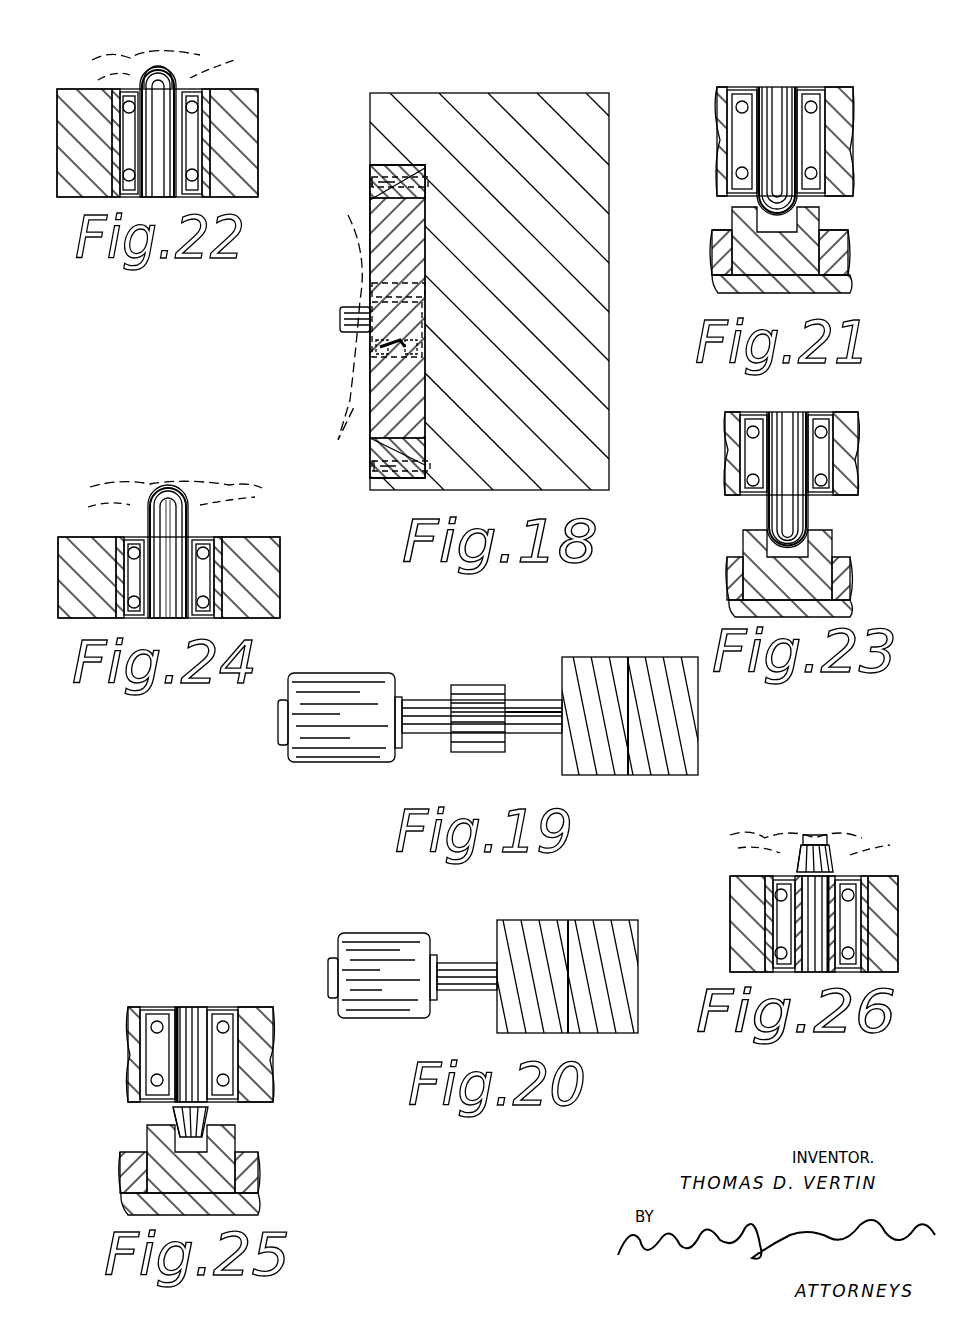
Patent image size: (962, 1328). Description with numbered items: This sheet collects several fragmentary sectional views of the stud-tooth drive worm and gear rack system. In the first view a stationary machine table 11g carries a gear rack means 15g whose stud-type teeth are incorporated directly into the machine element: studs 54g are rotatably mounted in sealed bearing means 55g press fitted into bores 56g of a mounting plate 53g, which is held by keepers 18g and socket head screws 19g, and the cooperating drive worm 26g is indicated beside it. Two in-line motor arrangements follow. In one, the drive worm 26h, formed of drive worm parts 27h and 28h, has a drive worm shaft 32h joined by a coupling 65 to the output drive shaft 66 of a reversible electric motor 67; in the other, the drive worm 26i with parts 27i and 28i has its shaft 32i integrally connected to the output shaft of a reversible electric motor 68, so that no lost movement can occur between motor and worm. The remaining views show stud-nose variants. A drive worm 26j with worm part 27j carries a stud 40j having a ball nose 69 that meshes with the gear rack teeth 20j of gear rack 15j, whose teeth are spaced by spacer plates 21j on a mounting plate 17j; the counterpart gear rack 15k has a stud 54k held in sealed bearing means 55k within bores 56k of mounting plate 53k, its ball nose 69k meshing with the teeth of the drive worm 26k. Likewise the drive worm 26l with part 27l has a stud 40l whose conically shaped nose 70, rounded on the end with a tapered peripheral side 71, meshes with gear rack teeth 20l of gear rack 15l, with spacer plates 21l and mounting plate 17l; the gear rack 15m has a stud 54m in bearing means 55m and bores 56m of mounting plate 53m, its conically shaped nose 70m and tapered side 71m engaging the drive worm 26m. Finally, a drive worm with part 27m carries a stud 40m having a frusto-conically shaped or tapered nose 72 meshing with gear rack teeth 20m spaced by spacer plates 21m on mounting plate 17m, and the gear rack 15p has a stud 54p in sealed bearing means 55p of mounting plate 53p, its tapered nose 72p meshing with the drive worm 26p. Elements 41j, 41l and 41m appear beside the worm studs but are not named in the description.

In FIG. 18, the stationary machine table 11g is at (497, 94).
In FIG. 18, the gear rack means 15g is at (368, 428).
In FIG. 21, the gear rack 15j is at (712, 254).
In FIG. 22, the gear rack 15k is at (262, 118).
In FIG. 23, the gear rack 15l is at (728, 590).
In FIG. 24, the gear rack 15m is at (275, 596).
In FIG. 25, the gear rack 15m is at (118, 1164).
In FIG. 26, the gear rack 15p is at (728, 882).
In FIG. 21, the mounting plate 17j is at (836, 284).
In FIG. 23, the mounting plate 17l is at (846, 603).
In FIG. 25, the mounting plate 17m is at (238, 1204).
In FIG. 18, the keeper 18g is at (376, 166).
In FIG. 18, the socket head screw 19g is at (372, 182).
In FIG. 21, the gear rack teeth 20j is at (748, 224).
In FIG. 23, the gear rack teeth 20l is at (750, 532).
In FIG. 25, the gear rack teeth 20m is at (225, 1140).
In FIG. 21, the spacer plate 21j is at (790, 255).
In FIG. 23, the spacer plate 21l is at (742, 567).
In FIG. 25, the spacer plate 21m is at (250, 1173).
In FIG. 18, the drive worm 26g is at (348, 246).
In FIG. 19, the drive worm 26h is at (622, 656).
In FIG. 20, the drive worm 26i is at (584, 920).
In FIG. 21, the drive worm 26j is at (716, 96).
In FIG. 22, the drive worm 26k is at (205, 55).
In FIG. 23, the drive worm 26l is at (723, 425).
In FIG. 24, the drive worm 26m is at (115, 490).
In FIG. 25, the drive worm 26m is at (126, 1030).
In FIG. 26, the drive worm 26p is at (862, 836).
In FIG. 19, the drive worm part 27h is at (592, 774).
In FIG. 20, the drive worm part 27i is at (517, 936).
In FIG. 21, the drive worm part 27j is at (838, 112).
In FIG. 23, the drive worm part 27l is at (843, 440).
In FIG. 25, the drive worm part 27m is at (250, 1056).
In FIG. 19, the drive worm part 28h is at (672, 774).
In FIG. 20, the drive worm part 28i is at (616, 952).
In FIG. 19, the drive worm shaft 32h is at (530, 702).
In FIG. 20, the drive worm shaft 32i is at (482, 990).
In FIG. 21, the stud 40j is at (778, 110).
In FIG. 23, the stud 40l is at (795, 422).
In FIG. 25, the stud 40m is at (192, 1018).
In FIG. 21, the ball bearing 41j is at (746, 135).
In FIG. 23, the ball bearing 41l is at (758, 447).
In FIG. 25, the ball bearing 41m is at (225, 1040).
In FIG. 18, the mounting plate 53g is at (378, 207).
In FIG. 22, the mounting plate 53k is at (248, 100).
In FIG. 24, the mounting plate 53m is at (262, 572).
In FIG. 26, the mounting plate 53p is at (890, 920).
In FIG. 18, the stud 54g is at (340, 321).
In FIG. 22, the stud 54k is at (175, 150).
In FIG. 24, the stud 54m is at (160, 540).
In FIG. 26, the stud 54p is at (822, 888).
In FIG. 18, the sealed bearing means 55g is at (380, 349).
In FIG. 22, the sealed bearing means 55k is at (133, 112).
In FIG. 24, the sealed bearing means 55m is at (210, 562).
In FIG. 26, the sealed bearing means 55p is at (780, 905).
In FIG. 18, the bore 56g is at (372, 375).
In FIG. 22, the bore 56k is at (196, 92).
In FIG. 24, the bore 56m is at (215, 618).
In FIG. 19, the coupling 65 is at (490, 740).
In FIG. 19, the output drive shaft 66 is at (438, 722).
In FIG. 19, the reversible electric motor 67 is at (352, 762).
In FIG. 20, the reversible electric motor 68 is at (378, 1012).
In FIG. 21, the ball nose 69 is at (735, 214).
In FIG. 22, the ball nose 69k is at (148, 68).
In FIG. 23, the conically shaped nose 70 is at (778, 545).
In FIG. 24, the conically shaped nose 70m is at (166, 485).
In FIG. 23, the tapered peripheral side 71 is at (802, 535).
In FIG. 24, the tapered peripheral side 71m is at (188, 498).
In FIG. 25, the frusto-conically shaped nose 72 is at (185, 1118).
In FIG. 26, the frusto-conically shaped nose 72p is at (812, 840).